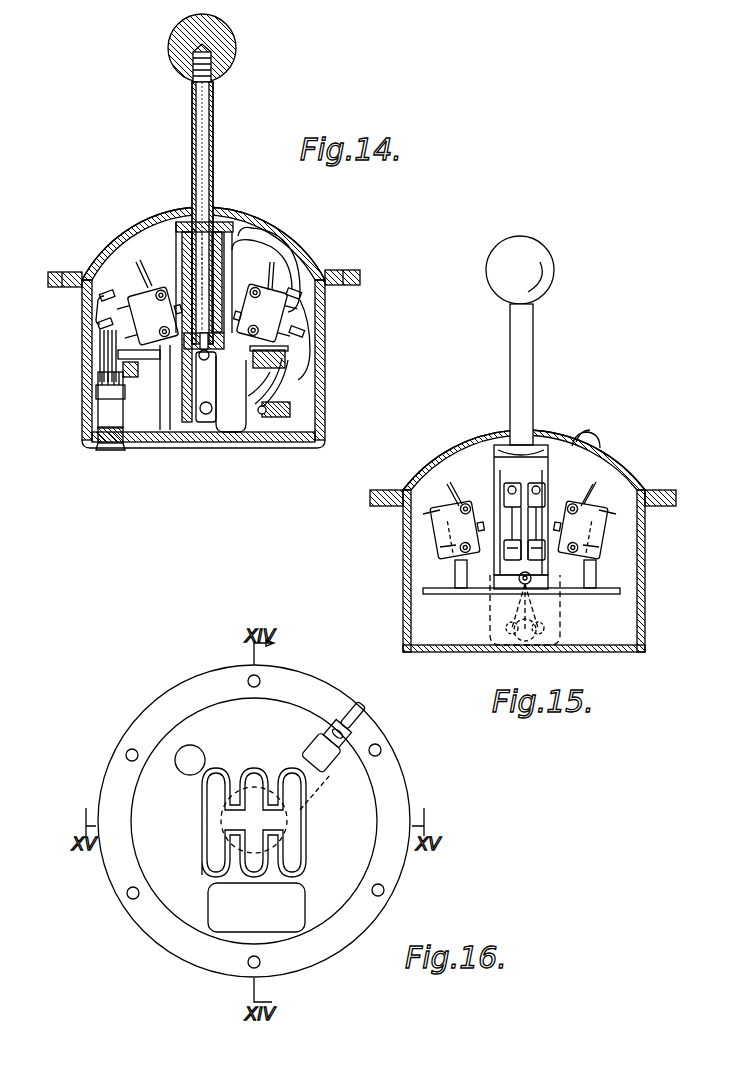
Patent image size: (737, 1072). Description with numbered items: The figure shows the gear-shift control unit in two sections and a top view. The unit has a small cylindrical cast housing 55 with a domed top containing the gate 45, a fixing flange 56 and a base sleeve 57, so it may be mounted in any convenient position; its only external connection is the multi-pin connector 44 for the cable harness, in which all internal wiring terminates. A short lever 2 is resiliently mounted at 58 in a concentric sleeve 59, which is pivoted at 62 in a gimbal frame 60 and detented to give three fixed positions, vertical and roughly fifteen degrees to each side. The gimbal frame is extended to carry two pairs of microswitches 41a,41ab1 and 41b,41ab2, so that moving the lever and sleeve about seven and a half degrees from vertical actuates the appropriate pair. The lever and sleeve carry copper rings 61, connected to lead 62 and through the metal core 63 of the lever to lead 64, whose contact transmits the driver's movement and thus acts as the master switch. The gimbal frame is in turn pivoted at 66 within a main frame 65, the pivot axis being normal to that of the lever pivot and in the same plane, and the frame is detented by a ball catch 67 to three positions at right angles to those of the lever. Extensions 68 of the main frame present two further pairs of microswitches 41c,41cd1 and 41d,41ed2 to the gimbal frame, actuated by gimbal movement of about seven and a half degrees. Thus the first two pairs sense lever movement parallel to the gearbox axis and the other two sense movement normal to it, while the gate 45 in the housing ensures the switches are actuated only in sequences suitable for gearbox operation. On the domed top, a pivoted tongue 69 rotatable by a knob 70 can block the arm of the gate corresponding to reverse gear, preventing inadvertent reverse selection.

In FIG. 14, the lever 2 is at (214, 133).
In FIG. 15, the lever 2 is at (512, 336).
In FIG. 16, the lever 2 is at (290, 832).
In FIG. 14, the multi-pin connector 44 is at (112, 430).
In FIG. 14, the gate 45 is at (240, 210).
In FIG. 15, the gate 45 is at (482, 438).
In FIG. 16, the gate 45 is at (200, 842).
In FIG. 14, the cast housing 55 is at (326, 330).
In FIG. 15, the cast housing 55 is at (404, 556).
In FIG. 14, the fixing flange 56 is at (340, 276).
In FIG. 15, the fixing flange 56 is at (392, 492).
In FIG. 16, the fixing flange 56 is at (172, 956).
In FIG. 14, the base sleeve 57 is at (326, 418).
In FIG. 14, the resilient mounting 58 is at (178, 240).
In FIG. 14, the concentric sleeve 59 is at (180, 250).
In FIG. 15, the concentric sleeve 59 is at (549, 470).
In FIG. 14, the gimbal frame 60 is at (172, 400).
In FIG. 15, the gimbal frame 60 is at (496, 500).
In FIG. 14, the copper rings 61 is at (258, 242).
In FIG. 14, the lever pivot / lead 62 is at (250, 460).
In FIG. 15, the lever pivot / lead 62 is at (492, 580).
In FIG. 14, the metal core 63 is at (200, 173).
In FIG. 14, the lead 64 is at (216, 430).
In FIG. 14, the main frame 65 is at (288, 356).
In FIG. 15, the main frame 65 is at (438, 594).
In FIG. 14, the gimbal frame pivot 66 is at (290, 366).
In FIG. 15, the gimbal frame pivot 66 is at (530, 582).
In FIG. 14, the ball catch 67 is at (276, 420).
In FIG. 15, the extensions of the main frame 68 is at (456, 578).
In FIG. 16, the pivoted tongue 69 is at (300, 805).
In FIG. 15, the knob 70 is at (594, 432).
In FIG. 16, the knob 70 is at (336, 734).
In FIG. 14, the microswitch pair 41a,41ab1 is at (132, 295).
In FIG. 14, the microswitch pair 41b,41ab2 is at (280, 292).
In FIG. 15, the microswitch pair 41c,41cd1 is at (440, 504).
In FIG. 15, the microswitch pair 41d,41ed2 is at (598, 504).